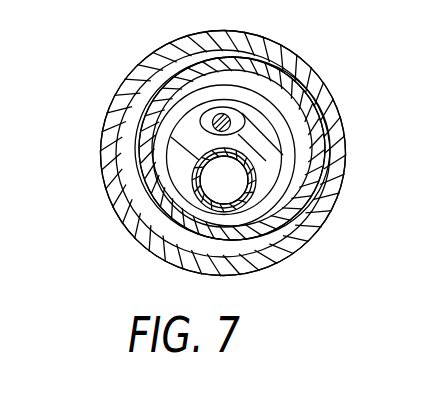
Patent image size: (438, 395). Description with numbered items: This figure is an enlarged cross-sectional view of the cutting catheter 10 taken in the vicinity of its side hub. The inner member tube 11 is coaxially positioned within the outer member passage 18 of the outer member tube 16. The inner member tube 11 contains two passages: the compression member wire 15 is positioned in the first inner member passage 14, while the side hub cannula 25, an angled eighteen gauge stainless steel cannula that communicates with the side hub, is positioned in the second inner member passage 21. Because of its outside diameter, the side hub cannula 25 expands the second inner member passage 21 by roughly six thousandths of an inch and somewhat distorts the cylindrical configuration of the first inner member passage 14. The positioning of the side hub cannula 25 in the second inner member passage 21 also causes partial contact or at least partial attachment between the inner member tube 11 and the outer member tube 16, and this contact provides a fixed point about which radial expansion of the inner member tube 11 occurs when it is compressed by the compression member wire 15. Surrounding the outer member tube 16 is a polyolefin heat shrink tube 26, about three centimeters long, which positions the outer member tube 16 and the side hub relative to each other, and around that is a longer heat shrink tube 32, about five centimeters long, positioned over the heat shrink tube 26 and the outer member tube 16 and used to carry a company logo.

The catheter 10 is at (113, 47).
The heat shrink tube 32 is at (261, 41).
The heat shrink tube 26 is at (288, 95).
The outer member tube 16 is at (286, 97).
The inner member tube 11 is at (275, 140).
The outer member passage 18 is at (290, 162).
The side hub cannula 25 is at (256, 181).
The second inner member passage 21 is at (182, 177).
The first inner member passage 14 is at (219, 114).
The compression member wire 15 is at (208, 110).